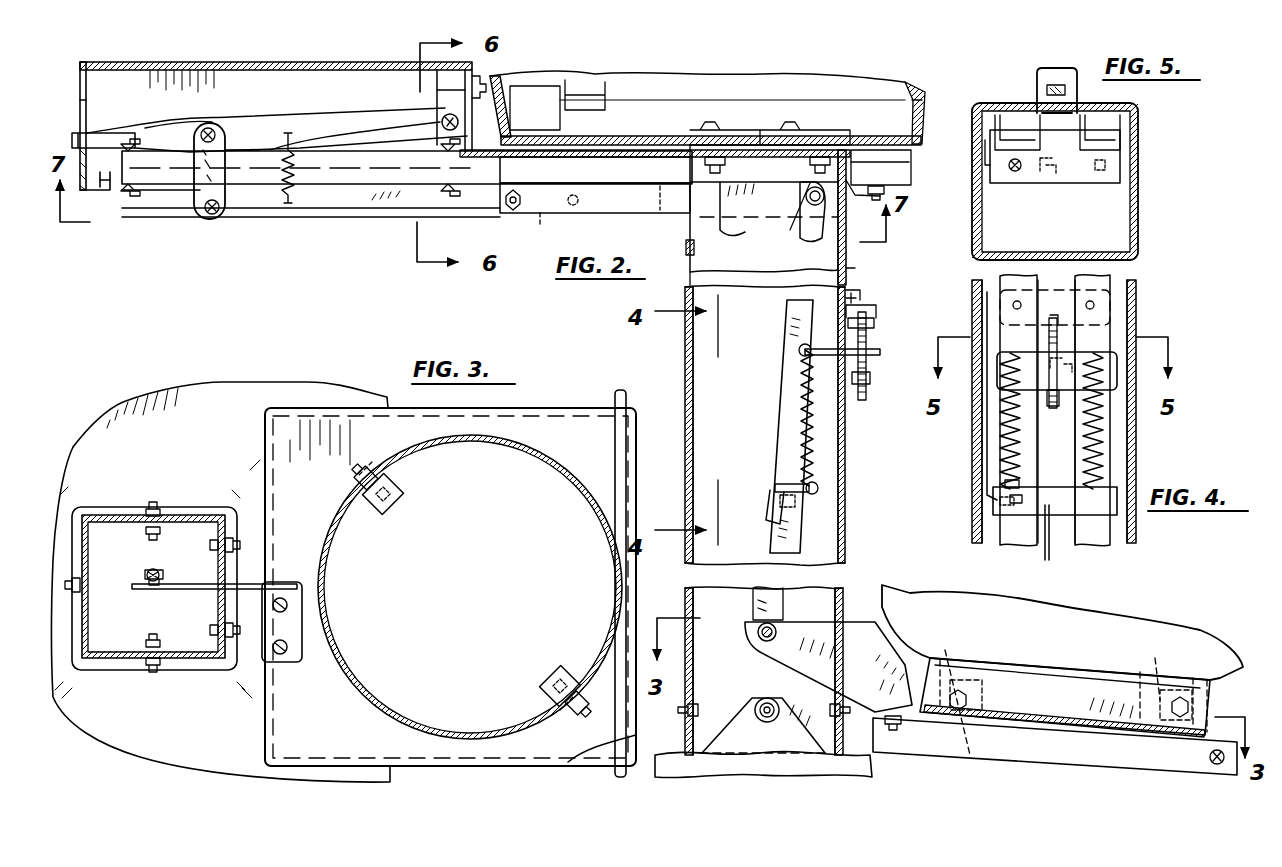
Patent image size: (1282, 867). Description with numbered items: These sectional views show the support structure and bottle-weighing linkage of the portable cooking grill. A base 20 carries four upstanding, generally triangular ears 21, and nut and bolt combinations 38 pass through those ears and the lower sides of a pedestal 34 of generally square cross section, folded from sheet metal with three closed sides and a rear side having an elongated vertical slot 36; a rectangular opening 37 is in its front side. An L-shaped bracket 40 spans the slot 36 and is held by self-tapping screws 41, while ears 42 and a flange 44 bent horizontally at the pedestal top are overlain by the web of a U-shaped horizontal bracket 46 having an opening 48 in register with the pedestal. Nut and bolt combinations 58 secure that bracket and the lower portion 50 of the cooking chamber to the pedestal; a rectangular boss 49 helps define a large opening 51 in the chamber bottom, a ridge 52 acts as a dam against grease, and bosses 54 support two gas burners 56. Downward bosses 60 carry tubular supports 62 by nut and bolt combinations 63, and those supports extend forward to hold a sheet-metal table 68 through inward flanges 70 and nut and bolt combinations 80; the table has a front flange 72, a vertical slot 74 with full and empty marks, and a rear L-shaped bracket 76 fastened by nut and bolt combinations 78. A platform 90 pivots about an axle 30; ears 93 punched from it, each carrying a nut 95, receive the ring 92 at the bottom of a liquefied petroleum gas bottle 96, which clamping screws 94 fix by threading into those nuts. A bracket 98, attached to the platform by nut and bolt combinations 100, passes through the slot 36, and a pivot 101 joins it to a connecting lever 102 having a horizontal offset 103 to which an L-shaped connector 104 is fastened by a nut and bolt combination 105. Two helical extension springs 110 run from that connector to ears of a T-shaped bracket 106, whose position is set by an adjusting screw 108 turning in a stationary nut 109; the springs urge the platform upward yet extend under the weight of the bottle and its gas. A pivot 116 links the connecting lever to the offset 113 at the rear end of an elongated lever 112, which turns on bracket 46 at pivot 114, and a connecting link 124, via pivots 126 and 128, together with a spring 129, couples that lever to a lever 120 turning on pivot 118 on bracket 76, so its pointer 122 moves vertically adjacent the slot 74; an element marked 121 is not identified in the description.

In FIG. 3, the base 20 is at (208, 392).
In FIG. 3, the ears 21 is at (215, 535).
In FIG. 3, the axle 30 is at (617, 392).
In FIG. 2, the pedestal 34 is at (685, 278).
In FIG. 3, the pedestal 34 is at (125, 665).
In FIG. 4, the pedestal 34 is at (1136, 448).
In FIG. 5, the pedestal 34 is at (1138, 210).
In FIG. 3, the elongated vertical slot 36 is at (240, 585).
In FIG. 4, the elongated vertical slot 36 is at (1072, 535).
In FIG. 5, the elongated vertical slot 36 is at (1040, 105).
In FIG. 2, the rectangular opening 37 is at (686, 245).
In FIG. 3, the nut and bolt combinations 38 is at (153, 502).
In FIG. 3, the L-shaped bracket 40 is at (876, 318).
In FIG. 4, the L-shaped bracket 40 is at (1112, 300).
In FIG. 2, the self-tapping screws 41 is at (860, 284).
In FIG. 3, the self-tapping screws 41 is at (858, 290).
In FIG. 4, the self-tapping screws 41 is at (1068, 300).
In FIG. 2, the ears 42 is at (810, 160).
In FIG. 2, the horizontally-directed flange 44 is at (724, 160).
In FIG. 2, the horizontally-directed bracket 46 is at (594, 160).
In FIG. 2, the opening 48 is at (800, 140).
In FIG. 2, the boss 49 is at (910, 160).
In FIG. 2, the lower portion of the cooking chamber 50 is at (914, 105).
In FIG. 2, the opening 51 is at (720, 140).
In FIG. 2, the ridge 52 is at (668, 136).
In FIG. 2, the bosses 54 is at (550, 135).
In FIG. 2, the gas burners 56 is at (600, 80).
In FIG. 2, the nut and bolt combinations 58 is at (737, 211).
In FIG. 2, the bosses 60 is at (537, 163).
In FIG. 2, the tubular supports 62 is at (172, 184).
In FIG. 2, the nut and bolt combinations 63 is at (504, 122).
In FIG. 2, the table or shelf 68 is at (204, 54).
In FIG. 2, the inwardly-extending flanges 70 is at (196, 200).
In FIG. 2, the flange 72 is at (100, 190).
In FIG. 2, the vertically-directed slot 74 is at (80, 100).
In FIG. 2, the L-shaped bracket 76 is at (437, 92).
In FIG. 2, the nut and bolt combinations 78 is at (485, 72).
In FIG. 2, the nut and bolt combinations 80 is at (136, 198).
In FIG. 3, the platform 90 is at (505, 768).
In FIG. 3, the ring 92 is at (565, 452).
In FIG. 3, the ears 93 is at (364, 500).
In FIG. 3, the clamping screws 94 is at (358, 472).
In FIG. 3, the nut 95 is at (375, 515).
In FIG. 3, the bottle 96 is at (1135, 620).
In FIG. 3, the bracket 98 is at (285, 590).
In FIG. 3, the nut and bolt combinations 100 is at (290, 655).
In FIG. 3, the pivot 101 is at (153, 582).
In FIG. 2, the connecting lever 102 is at (912, 189).
In FIG. 3, the connecting lever 102 is at (145, 575).
In FIG. 4, the connecting lever 102 is at (987, 455).
In FIG. 5, the connecting lever 102 is at (985, 155).
In FIG. 3, the horizontal offset 103 is at (800, 500).
In FIG. 4, the horizontal offset 103 is at (1000, 503).
In FIG. 5, the horizontal offset 103 is at (1045, 185).
In FIG. 3, the L-shaped connector 104 is at (768, 496).
In FIG. 4, the L-shaped connector 104 is at (1120, 495).
In FIG. 5, the L-shaped connector 104 is at (1098, 175).
In FIG. 3, the nut and bolt combination 105 is at (780, 484).
In FIG. 4, the nut and bolt combination 105 is at (1005, 486).
In FIG. 5, the nut and bolt combination 105 is at (1015, 180).
In FIG. 3, the T-shaped bracket 106 is at (880, 352).
In FIG. 4, the T-shaped bracket 106 is at (1117, 355).
In FIG. 5, the T-shaped bracket 106 is at (1045, 72).
In FIG. 3, the adjusting screw 108 is at (868, 335).
In FIG. 4, the adjusting screw 108 is at (1060, 338).
In FIG. 5, the adjusting screw 108 is at (1058, 84).
In FIG. 3, the nut 109 is at (870, 376).
In FIG. 4, the nut 109 is at (1052, 406).
In FIG. 3, the helical extension springs 110 is at (820, 445).
In FIG. 4, the helical extension springs 110 is at (1088, 450).
In FIG. 5, the helical extension springs 110 is at (1120, 150).
In FIG. 2, the elongated lever 112 is at (330, 218).
In FIG. 2, the offset 113 is at (640, 200).
In FIG. 2, the pivot 114 is at (516, 212).
In FIG. 2, the pivot 116 is at (810, 208).
In FIG. 2, the pivot 118 is at (442, 118).
In FIG. 2, the lever 120 is at (275, 110).
In FIG. 2, the stop 121 is at (528, 239).
In FIG. 2, the pointer 122 is at (72, 141).
In FIG. 2, the connecting link 124 is at (232, 200).
In FIG. 2, the pivot 126 is at (222, 122).
In FIG. 2, the pivot 128 is at (212, 215).
In FIG. 2, the helical extension spring 129 is at (305, 130).